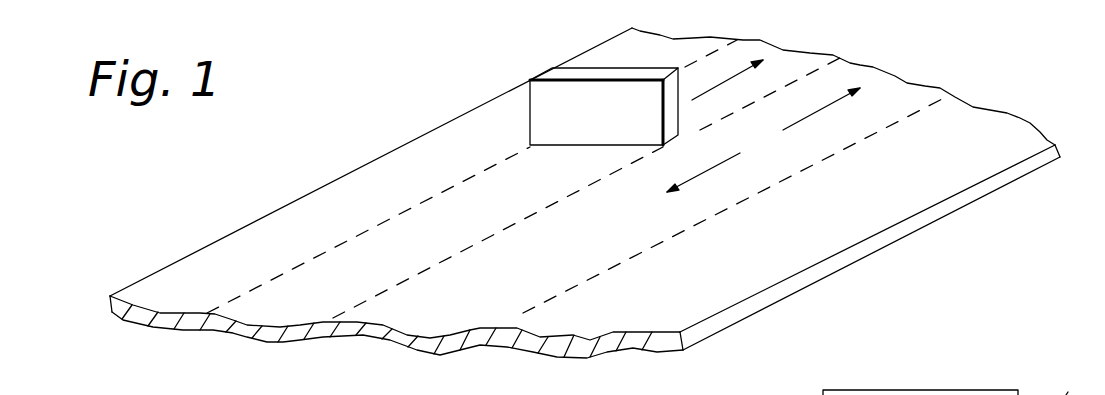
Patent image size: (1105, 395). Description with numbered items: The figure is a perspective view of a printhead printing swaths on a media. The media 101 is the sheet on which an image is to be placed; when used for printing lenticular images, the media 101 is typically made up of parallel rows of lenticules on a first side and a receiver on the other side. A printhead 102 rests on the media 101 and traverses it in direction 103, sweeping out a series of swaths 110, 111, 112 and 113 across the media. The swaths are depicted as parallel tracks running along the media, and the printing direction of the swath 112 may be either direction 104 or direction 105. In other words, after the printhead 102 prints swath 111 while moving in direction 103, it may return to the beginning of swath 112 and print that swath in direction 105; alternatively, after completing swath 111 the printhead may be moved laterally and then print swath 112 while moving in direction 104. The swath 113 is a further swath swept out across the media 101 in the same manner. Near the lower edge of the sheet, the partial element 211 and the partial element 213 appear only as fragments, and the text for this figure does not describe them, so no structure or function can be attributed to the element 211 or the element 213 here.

The substrate sheet 101 is at (387, 152).
The block 102 is at (547, 90).
The first direction arrow 103 is at (730, 77).
The second direction arrow 104 is at (713, 168).
The third direction arrow 105 is at (828, 100).
The first track 110 is at (188, 297).
The second track 111 is at (348, 282).
The third track 112 is at (498, 290).
The side edge 113 is at (725, 275).
The base plate 211 is at (962, 390).
The element 213 is at (1072, 382).